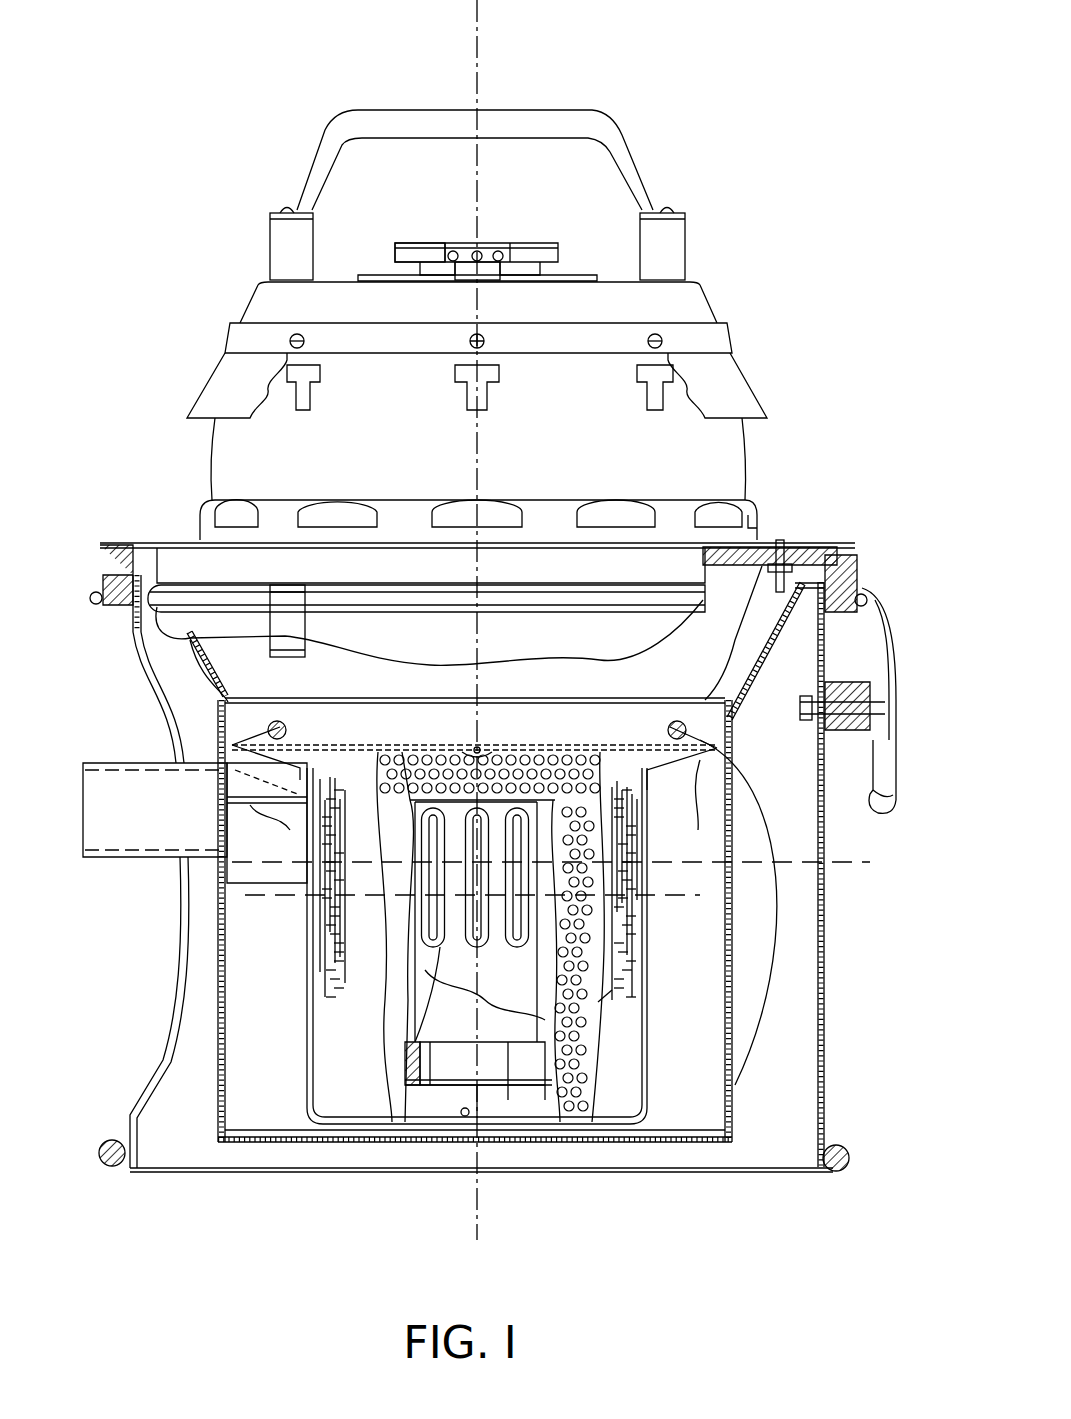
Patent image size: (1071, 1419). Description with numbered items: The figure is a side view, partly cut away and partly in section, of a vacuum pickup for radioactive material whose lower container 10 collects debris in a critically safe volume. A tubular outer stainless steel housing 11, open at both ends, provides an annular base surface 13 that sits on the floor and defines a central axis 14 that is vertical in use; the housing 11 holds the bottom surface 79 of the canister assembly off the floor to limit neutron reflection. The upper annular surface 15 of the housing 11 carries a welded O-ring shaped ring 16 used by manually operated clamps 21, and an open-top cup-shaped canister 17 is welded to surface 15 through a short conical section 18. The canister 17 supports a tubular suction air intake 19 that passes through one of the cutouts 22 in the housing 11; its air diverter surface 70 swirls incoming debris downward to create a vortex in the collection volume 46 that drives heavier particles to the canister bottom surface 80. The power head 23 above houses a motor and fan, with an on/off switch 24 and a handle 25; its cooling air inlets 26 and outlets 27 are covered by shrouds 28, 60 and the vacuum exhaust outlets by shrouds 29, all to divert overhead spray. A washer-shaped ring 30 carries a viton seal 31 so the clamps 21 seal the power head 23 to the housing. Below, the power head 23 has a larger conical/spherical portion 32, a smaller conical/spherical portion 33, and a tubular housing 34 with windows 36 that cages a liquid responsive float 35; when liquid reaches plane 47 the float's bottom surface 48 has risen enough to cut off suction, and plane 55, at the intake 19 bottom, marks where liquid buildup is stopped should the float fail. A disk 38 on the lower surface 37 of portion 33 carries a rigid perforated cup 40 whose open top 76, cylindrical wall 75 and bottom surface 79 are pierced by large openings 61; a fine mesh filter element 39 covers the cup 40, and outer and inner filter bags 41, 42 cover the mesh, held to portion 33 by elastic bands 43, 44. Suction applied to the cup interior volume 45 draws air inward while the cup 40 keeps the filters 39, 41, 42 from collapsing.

The lower container 10 is at (825, 838).
The outer stainless steel housing 11 is at (824, 968).
The annular surface 13 is at (735, 1168).
The central axis 14 is at (480, 184).
The upper annular horizontal surface 15 is at (810, 622).
The O-ring shaped stainless steel ring 16 is at (888, 628).
The canister 17 is at (730, 832).
The upper conical section 18 is at (748, 682).
The suction air intake 19 is at (130, 765).
The mechanical clamps 21 is at (882, 710).
The cutouts 22 is at (172, 950).
The power head 23 is at (754, 453).
The motor on/off switch 24 is at (490, 275).
The handle 25 is at (622, 150).
The cooling air inlets 26 is at (455, 252).
The cooling air outlets 27 is at (470, 391).
The shroud 28 is at (415, 252).
The shrouds 29 is at (350, 505).
The washer-shaped ring 30 is at (820, 545).
The viton seal 31 is at (860, 567).
The larger diameter conical/spherical portion 32 is at (725, 685).
The smaller diameter conical/spherical portion 33 is at (665, 720).
The float housing 34 is at (548, 1085).
The liquid responsive float 35 is at (440, 1030).
The windows 36 is at (508, 1090).
The lower horizontal surface 37 is at (328, 742).
The washer-shaped disk 38 is at (654, 776).
The filter element 39 is at (365, 965).
The cup 40 is at (560, 1012).
The outer filter bag 41 is at (745, 728).
The inner filter bag 42 is at (702, 818).
The elastic band 43 is at (682, 742).
The elastic band 44 is at (640, 740).
The interior volume 45 is at (385, 1000).
The debris collection volume 46 is at (671, 1016).
The horizontal reference plane 47 is at (290, 905).
The bottom surface of float 48 is at (465, 1115).
The horizontal plane 55 is at (832, 862).
The shroud 60 is at (740, 382).
The openings 61 is at (412, 745).
The air diverter surface 70 is at (300, 825).
The cylindrical wall 75 is at (593, 1004).
The open top 76 is at (478, 745).
The bottom surface 79 is at (478, 1118).
The bottom surface of canister 80 is at (292, 1132).